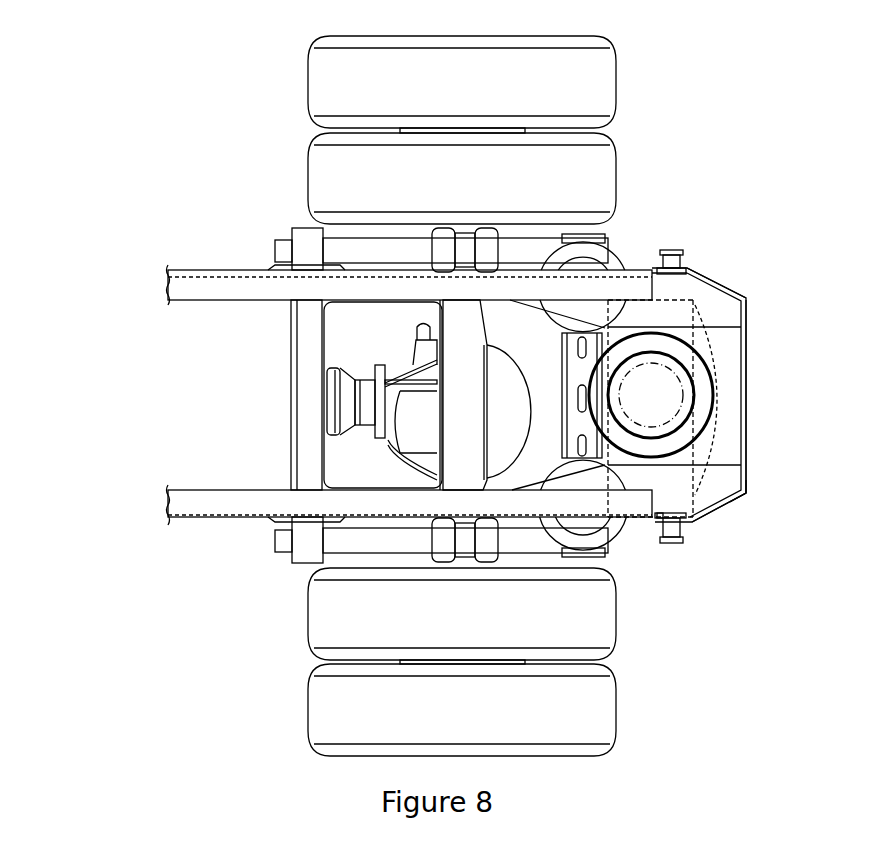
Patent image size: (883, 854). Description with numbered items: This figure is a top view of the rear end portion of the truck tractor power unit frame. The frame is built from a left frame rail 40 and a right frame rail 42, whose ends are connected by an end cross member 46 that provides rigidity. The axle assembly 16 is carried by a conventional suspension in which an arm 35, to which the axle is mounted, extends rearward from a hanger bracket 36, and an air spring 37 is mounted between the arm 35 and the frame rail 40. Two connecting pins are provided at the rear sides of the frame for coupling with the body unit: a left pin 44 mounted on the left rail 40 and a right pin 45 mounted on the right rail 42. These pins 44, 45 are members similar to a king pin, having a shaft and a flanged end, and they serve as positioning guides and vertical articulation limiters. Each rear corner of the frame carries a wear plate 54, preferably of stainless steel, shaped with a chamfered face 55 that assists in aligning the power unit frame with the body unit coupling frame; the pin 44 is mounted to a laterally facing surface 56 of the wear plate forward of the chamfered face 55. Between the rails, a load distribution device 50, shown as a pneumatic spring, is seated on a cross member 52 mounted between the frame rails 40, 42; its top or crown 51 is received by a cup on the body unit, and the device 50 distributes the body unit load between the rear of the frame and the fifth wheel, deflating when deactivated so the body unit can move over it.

The axle assembly 16 is at (303, 392).
The arm 35 is at (355, 548).
The hanger bracket 36 is at (300, 552).
The air spring 37 is at (612, 542).
The left frame rail 40 is at (218, 518).
The right frame rail 42 is at (243, 270).
The left pin 44 is at (683, 543).
The right pin 45 is at (672, 250).
The end cross member 46 is at (745, 392).
The load distribution device 50 is at (700, 360).
The crown 51 is at (677, 430).
The cross member 52 is at (742, 322).
The wear plate 54 is at (745, 493).
The chamfered face 55 is at (712, 280).
The laterally facing surface 56 is at (655, 523).